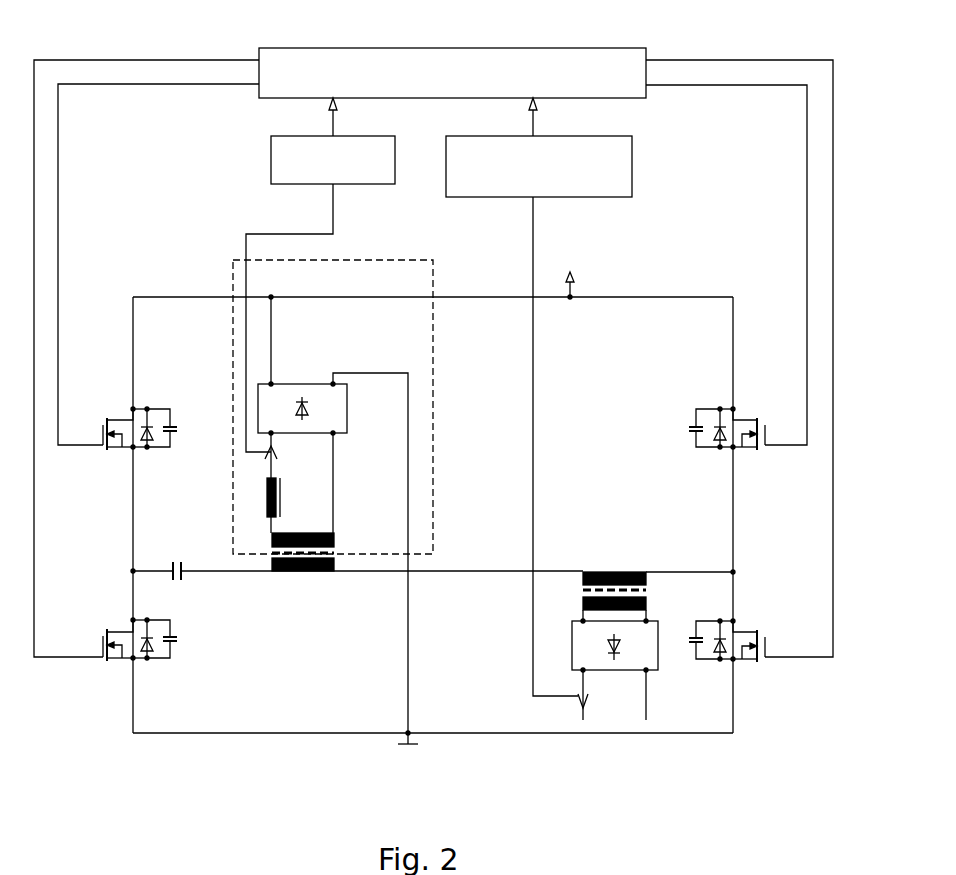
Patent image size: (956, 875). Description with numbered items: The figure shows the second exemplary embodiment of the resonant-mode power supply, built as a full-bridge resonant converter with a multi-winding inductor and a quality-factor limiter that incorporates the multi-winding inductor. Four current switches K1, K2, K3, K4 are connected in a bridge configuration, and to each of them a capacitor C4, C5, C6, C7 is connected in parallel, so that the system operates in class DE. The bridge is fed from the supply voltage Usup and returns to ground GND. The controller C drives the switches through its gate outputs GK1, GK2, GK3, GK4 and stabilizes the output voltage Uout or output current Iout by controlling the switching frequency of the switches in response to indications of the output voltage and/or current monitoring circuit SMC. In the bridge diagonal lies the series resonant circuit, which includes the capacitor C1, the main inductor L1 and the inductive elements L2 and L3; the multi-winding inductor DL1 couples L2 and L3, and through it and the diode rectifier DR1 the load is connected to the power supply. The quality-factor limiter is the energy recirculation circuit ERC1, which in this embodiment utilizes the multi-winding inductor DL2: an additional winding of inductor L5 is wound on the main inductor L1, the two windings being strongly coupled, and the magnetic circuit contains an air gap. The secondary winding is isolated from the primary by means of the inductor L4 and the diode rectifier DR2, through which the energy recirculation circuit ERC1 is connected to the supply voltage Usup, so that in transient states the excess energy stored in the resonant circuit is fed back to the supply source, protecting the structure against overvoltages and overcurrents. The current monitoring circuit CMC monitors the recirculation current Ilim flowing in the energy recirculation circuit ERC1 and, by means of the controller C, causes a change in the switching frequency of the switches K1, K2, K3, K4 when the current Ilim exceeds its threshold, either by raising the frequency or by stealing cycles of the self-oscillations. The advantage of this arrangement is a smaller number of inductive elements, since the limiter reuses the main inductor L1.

The controller C is at (463, 64).
The gate control output 1 GK1 is at (172, 263).
The gate control output 2 GK2 is at (160, 357).
The gate control output 3 GK3 is at (707, 263).
The gate control output 4 GK4 is at (720, 357).
The current monitoring circuit CMC is at (313, 275).
The output voltage and/or current monitoring circuit SMC is at (554, 397).
The energy recirculation circuit ERC1 is at (333, 400).
The supply voltage Usup is at (570, 276).
The current switch K1 is at (114, 428).
The current switch K2 is at (114, 639).
The current switch K3 is at (750, 428).
The current switch K4 is at (750, 640).
The capacitor C1 is at (176, 560).
The capacitor C4 is at (169, 428).
The capacitor C5 is at (169, 639).
The capacitor C6 is at (694, 428).
The capacitor C7 is at (694, 640).
The diode rectifier DR2 is at (302, 366).
The rectifier diode DR1 is at (615, 641).
The recirculation circuit current Ilim is at (286, 455).
The inductor L4 is at (282, 497).
The inductor L5 is at (288, 539).
The main inductor L1 is at (288, 565).
The inductive element L2 is at (614, 571).
The inductive element L3 is at (602, 606).
The multi-winding inductor DL2 is at (316, 551).
The multi-winding inductor DL1 is at (630, 594).
The output current Iout is at (570, 695).
The output voltage Uout is at (624, 695).
The ground GND is at (408, 746).